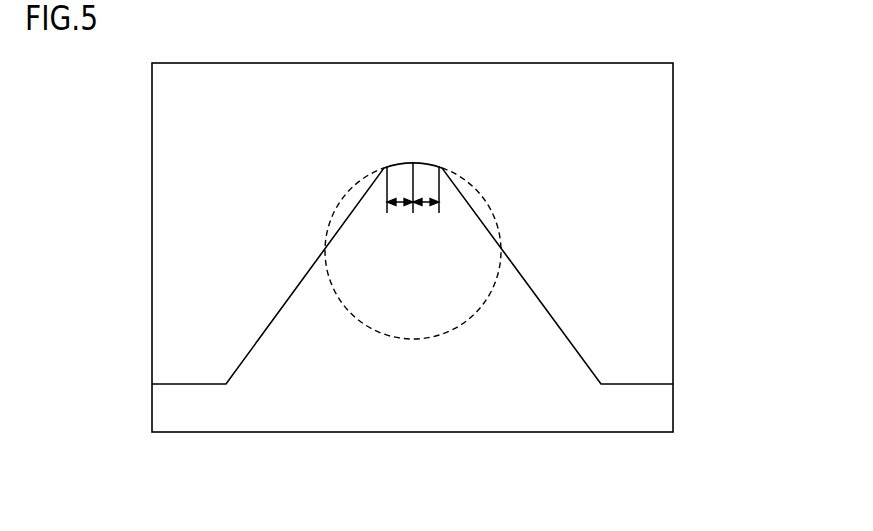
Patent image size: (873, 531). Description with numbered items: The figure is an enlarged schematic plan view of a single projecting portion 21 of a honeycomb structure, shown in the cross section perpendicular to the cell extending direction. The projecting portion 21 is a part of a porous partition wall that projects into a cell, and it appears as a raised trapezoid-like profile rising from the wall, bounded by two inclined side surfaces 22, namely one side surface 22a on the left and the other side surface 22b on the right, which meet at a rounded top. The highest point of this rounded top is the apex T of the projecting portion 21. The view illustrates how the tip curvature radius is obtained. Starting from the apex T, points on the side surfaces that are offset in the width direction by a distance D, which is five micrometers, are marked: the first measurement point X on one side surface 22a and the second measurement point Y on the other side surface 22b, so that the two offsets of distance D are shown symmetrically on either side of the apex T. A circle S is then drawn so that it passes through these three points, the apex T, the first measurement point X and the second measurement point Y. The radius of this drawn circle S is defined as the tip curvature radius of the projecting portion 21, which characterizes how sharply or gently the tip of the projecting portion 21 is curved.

The projecting portion 21 is at (480, 390).
The side surface 22 is at (419, 273).
The one side surface 22a is at (278, 312).
The other side surface 22b is at (561, 330).
The circle S is at (483, 197).
The apex T is at (413, 163).
The first measurement point X is at (441, 166).
The second measurement point Y is at (387, 167).
The distance D is at (413, 217).